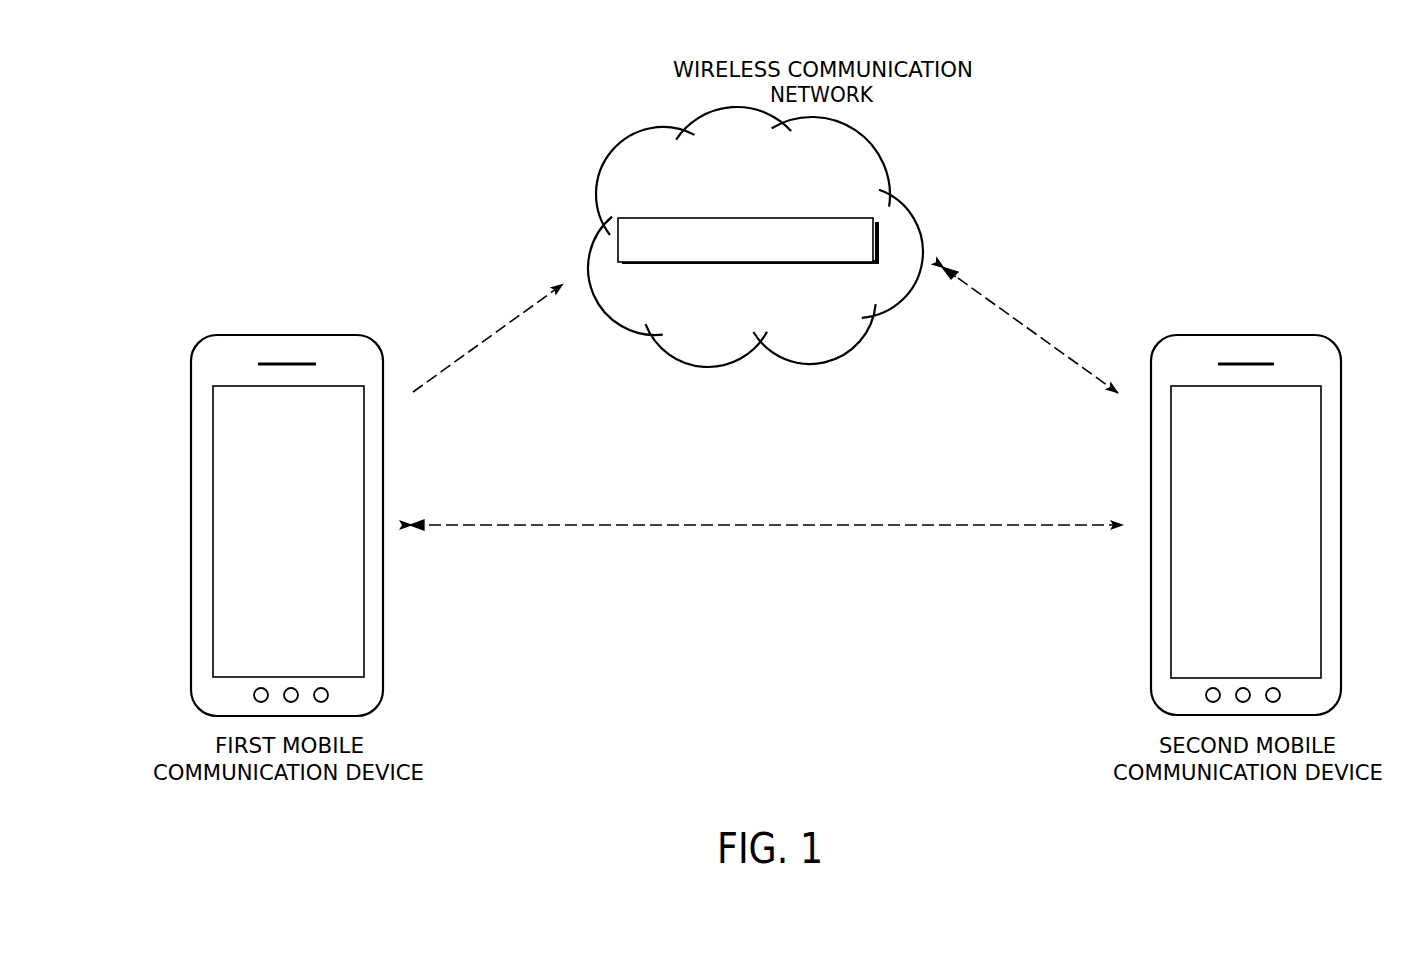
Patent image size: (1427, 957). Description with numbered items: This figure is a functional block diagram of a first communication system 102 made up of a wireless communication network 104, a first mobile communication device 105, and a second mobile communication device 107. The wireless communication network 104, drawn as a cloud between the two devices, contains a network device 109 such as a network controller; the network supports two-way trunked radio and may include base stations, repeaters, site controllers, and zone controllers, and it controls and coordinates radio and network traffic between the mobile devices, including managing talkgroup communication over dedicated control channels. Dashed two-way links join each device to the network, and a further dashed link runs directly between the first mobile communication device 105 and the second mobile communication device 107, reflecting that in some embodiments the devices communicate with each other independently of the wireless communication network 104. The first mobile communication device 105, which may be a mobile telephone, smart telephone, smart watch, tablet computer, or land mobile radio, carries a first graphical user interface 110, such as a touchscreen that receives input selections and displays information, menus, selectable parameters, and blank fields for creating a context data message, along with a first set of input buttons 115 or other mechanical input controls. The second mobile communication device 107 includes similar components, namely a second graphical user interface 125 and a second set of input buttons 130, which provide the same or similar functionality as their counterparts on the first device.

The first communication system 102 is at (1101, 147).
The wireless communication network 104 is at (615, 153).
The first mobile communication device 105 is at (191, 565).
The second mobile communication device 107 is at (1341, 452).
The network device 109 is at (745, 218).
The first graphical user interface 110 is at (240, 462).
The first set of input buttons 115 is at (254, 695).
The second graphical user interface 125 is at (1299, 585).
The second set of input buttons 130 is at (1206, 695).